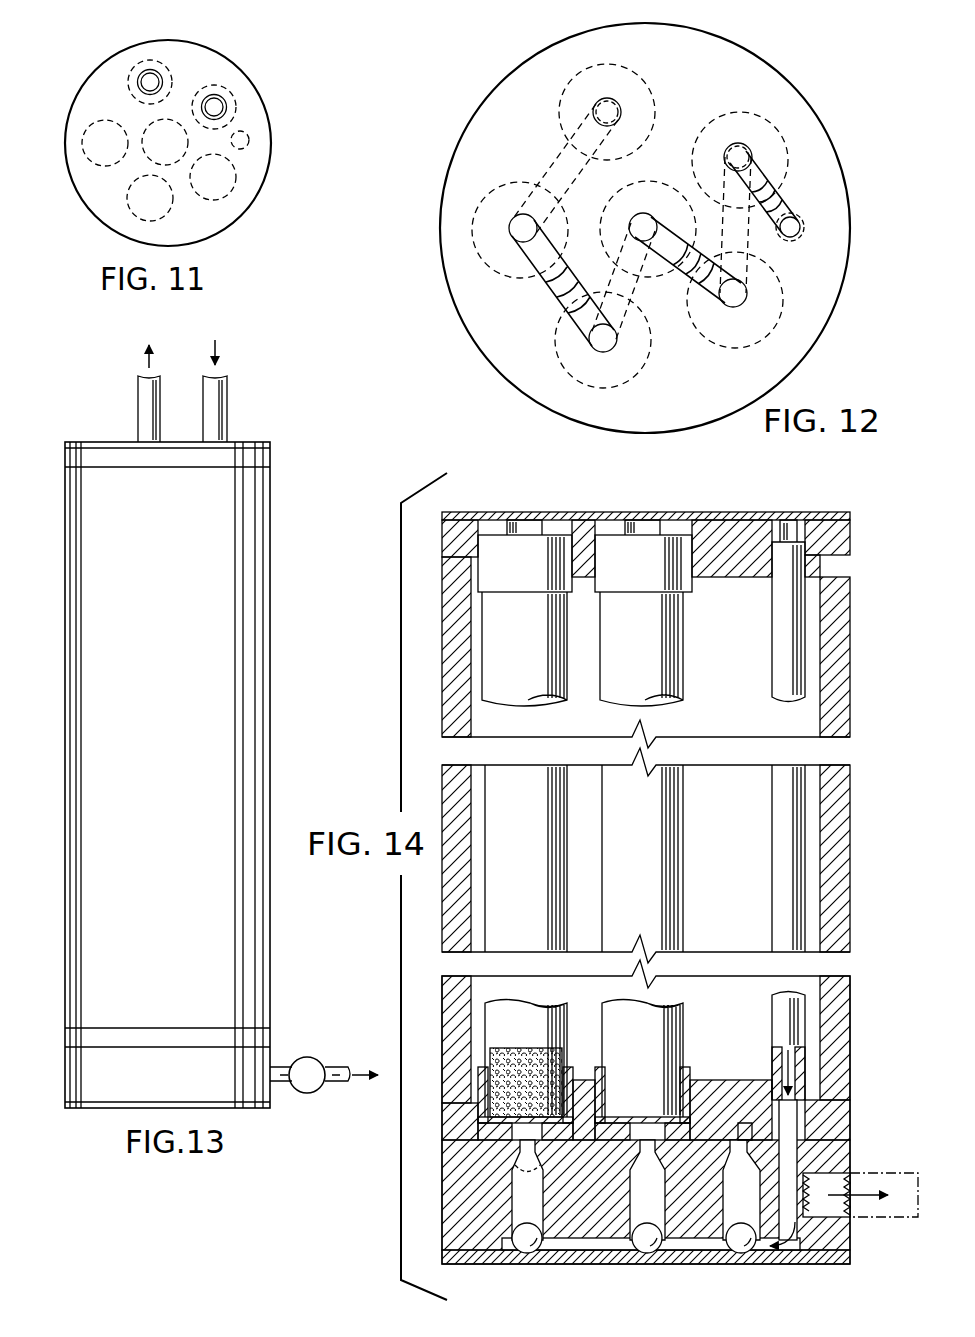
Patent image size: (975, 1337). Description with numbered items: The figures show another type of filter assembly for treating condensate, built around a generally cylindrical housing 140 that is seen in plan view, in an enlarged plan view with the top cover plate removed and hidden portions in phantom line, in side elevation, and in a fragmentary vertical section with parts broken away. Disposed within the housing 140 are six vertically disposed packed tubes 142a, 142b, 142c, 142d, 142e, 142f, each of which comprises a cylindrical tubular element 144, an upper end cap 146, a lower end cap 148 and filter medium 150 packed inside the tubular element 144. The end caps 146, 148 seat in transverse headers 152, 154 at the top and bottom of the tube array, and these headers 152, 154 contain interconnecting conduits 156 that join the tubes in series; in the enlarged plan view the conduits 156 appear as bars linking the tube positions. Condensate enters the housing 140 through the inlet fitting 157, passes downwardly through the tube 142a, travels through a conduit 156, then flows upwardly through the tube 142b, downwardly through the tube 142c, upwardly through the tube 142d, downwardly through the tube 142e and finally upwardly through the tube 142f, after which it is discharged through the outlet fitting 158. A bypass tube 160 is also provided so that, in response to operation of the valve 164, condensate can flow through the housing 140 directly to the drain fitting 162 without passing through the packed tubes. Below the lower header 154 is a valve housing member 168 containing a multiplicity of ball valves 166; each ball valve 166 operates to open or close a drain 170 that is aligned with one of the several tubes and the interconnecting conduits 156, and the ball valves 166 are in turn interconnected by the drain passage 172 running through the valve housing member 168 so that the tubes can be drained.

In FIG. 13, the housing 140 is at (271, 627).
In FIG. 12, the packed tube 142a is at (783, 137).
In FIG. 12, the packed tube 142b is at (786, 305).
In FIG. 12, the packed tube 142c is at (657, 175).
In FIG. 12, the packed tube 142d is at (565, 375).
In FIG. 12, the packed tube 142e is at (473, 231).
In FIG. 12, the packed tube 142f is at (585, 67).
In FIG. 14, the cylindrical tubular element 144 is at (537, 896).
In FIG. 14, the end cap 146 is at (500, 545).
In FIG. 14, the end cap 148 is at (478, 1075).
In FIG. 14, the filter medium 150 is at (520, 1050).
In FIG. 14, the transverse header 152 is at (851, 530).
In FIG. 14, the transverse header 154 is at (850, 1116).
In FIG. 12, the interconnecting conduit 156 is at (548, 168).
In FIG. 11, the inlet fitting 157 is at (216, 106).
In FIG. 13, the inlet fitting 157 is at (228, 395).
In FIG. 11, the outlet fitting 158 is at (150, 82).
In FIG. 13, the outlet fitting 158 is at (138, 393).
In FIG. 12, the bypass tube 160 is at (805, 227).
In FIG. 13, the drain fitting 162 is at (283, 1062).
In FIG. 14, the drain fitting 162 is at (893, 1218).
In FIG. 13, the valve 164 is at (305, 1094).
In FIG. 14, the ball valve 166 is at (635, 1197).
In FIG. 14, the valve housing member 168 is at (480, 1245).
In FIG. 14, the drain 170 is at (640, 1152).
In FIG. 14, the drain passage 172 is at (577, 1252).